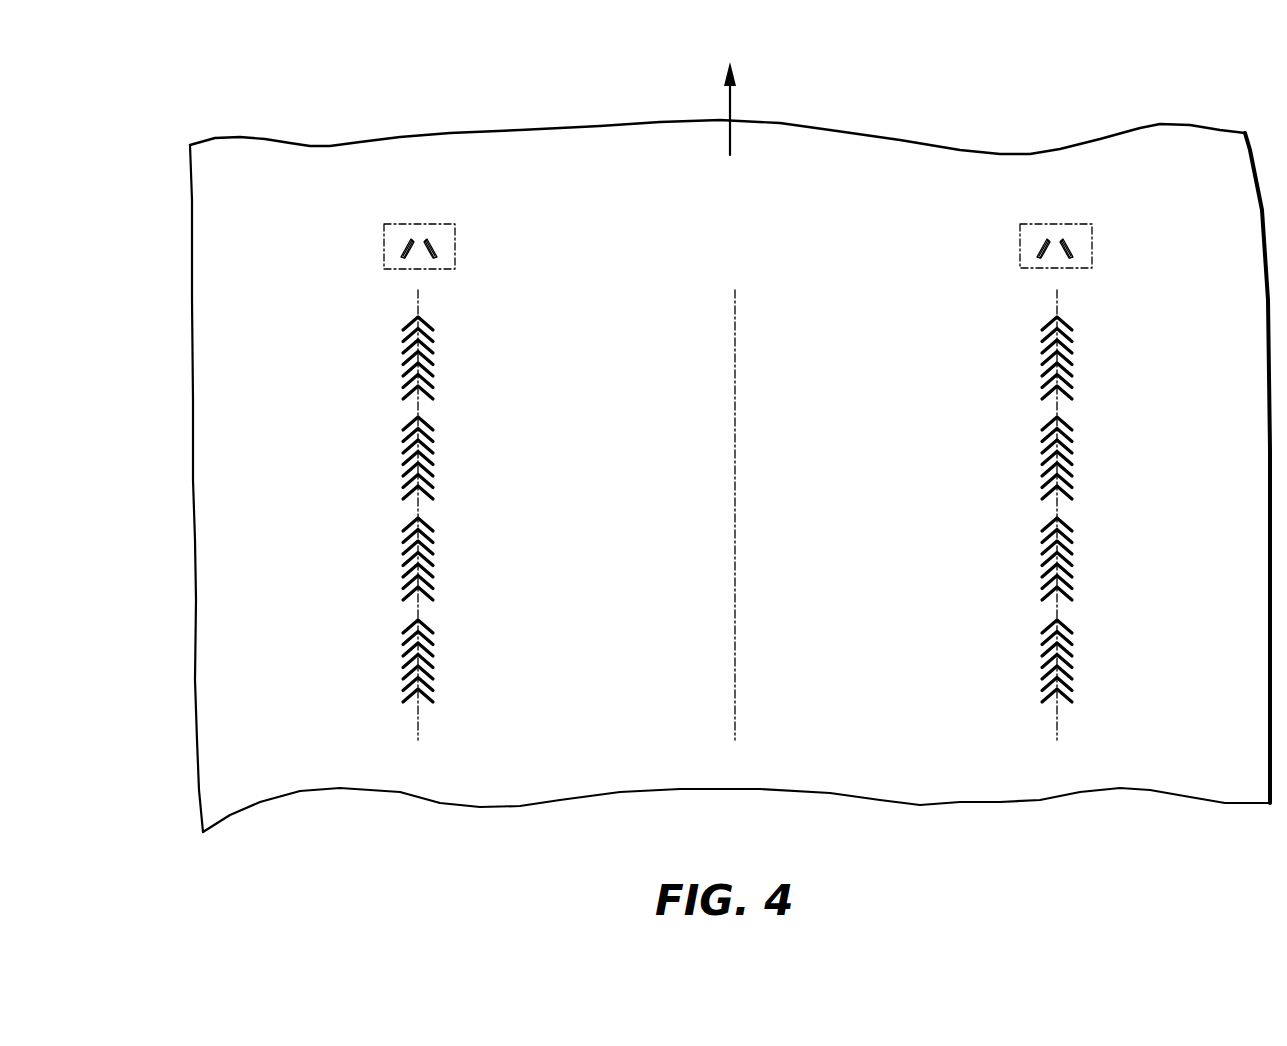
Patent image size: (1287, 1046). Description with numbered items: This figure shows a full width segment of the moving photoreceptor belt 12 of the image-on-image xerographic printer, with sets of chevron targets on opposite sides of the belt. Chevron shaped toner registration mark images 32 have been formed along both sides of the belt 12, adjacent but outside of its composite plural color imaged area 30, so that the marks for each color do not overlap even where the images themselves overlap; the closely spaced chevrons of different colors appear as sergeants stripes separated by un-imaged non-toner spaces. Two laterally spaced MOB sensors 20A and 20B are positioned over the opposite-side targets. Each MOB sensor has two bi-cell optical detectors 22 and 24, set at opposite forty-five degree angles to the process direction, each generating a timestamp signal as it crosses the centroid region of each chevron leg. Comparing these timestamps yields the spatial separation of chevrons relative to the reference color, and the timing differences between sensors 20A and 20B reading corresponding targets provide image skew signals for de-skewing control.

The photoreceptor belt 12 is at (603, 137).
The MOB sensor 20A is at (455, 266).
The MOB sensor 20B is at (1092, 240).
The bi-cell optical detector 22 is at (402, 251).
The bi-cell optical detector 24 is at (437, 251).
The imaged area 30 is at (617, 689).
The chevron shaped toner registration mark images 32 is at (737, 509).